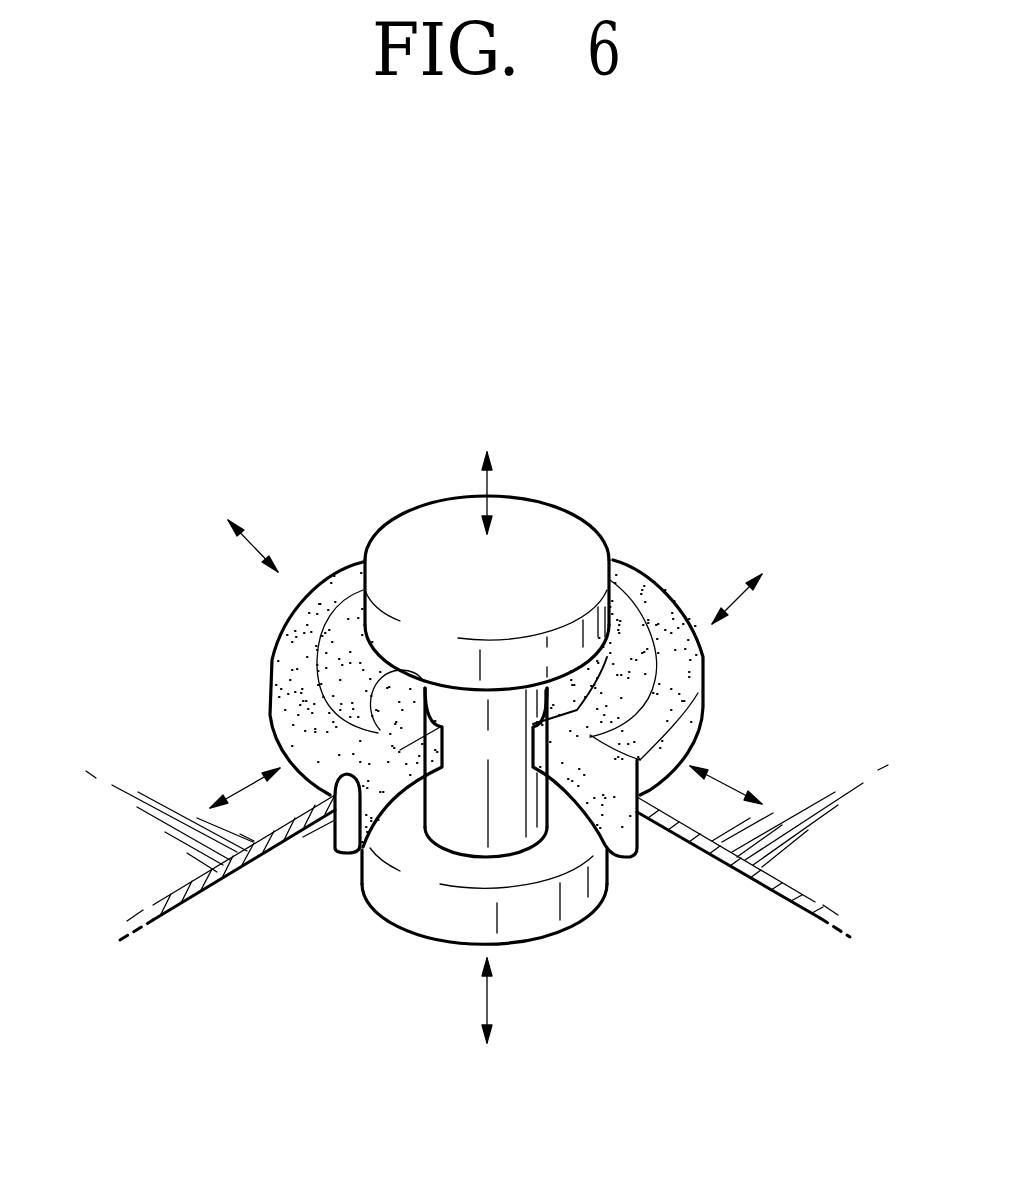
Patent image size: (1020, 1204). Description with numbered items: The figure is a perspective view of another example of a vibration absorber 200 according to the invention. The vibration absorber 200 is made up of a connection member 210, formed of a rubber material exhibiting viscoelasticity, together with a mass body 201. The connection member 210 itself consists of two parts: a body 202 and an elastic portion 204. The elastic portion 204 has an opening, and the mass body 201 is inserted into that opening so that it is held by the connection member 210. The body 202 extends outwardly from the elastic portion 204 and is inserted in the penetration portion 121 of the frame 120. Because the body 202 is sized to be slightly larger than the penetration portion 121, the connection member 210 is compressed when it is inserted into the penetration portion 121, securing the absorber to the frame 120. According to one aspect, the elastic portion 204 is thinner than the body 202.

The vibration absorber 200 is at (778, 405).
The mass body 201 is at (537, 520).
The body 202 is at (278, 642).
The elastic portion 204 is at (402, 722).
The connection member 210 is at (108, 612).
The frame 120 is at (860, 681).
The penetration portion 121 is at (357, 847).